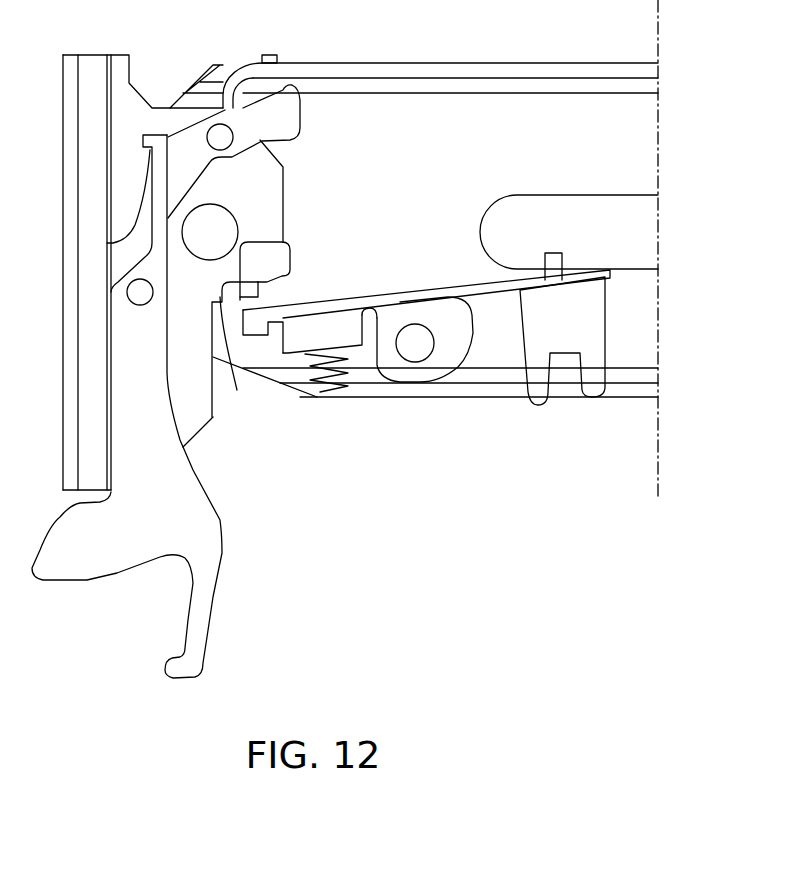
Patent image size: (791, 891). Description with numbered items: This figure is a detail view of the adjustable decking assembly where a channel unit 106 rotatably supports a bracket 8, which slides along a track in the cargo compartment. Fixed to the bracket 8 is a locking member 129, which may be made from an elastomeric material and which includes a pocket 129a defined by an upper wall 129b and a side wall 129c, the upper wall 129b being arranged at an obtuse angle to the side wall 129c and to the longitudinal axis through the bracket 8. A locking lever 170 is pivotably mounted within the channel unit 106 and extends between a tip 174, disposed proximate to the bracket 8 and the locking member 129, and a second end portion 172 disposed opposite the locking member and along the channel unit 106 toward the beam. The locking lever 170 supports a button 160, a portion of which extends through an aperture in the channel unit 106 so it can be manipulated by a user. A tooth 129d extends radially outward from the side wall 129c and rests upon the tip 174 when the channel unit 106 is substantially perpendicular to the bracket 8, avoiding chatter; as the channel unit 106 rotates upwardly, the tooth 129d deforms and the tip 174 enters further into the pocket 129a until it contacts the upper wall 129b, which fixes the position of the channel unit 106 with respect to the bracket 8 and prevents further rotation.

The bracket 8 is at (190, 373).
The channel unit 106 is at (553, 75).
The locking member 129 is at (255, 255).
The pocket 129a is at (283, 290).
The upper wall 129b is at (285, 270).
The side wall 129c is at (264, 352).
The tooth 129d is at (275, 290).
The button 160 is at (533, 315).
The locking lever 170 is at (470, 300).
The second end portion 172 is at (473, 283).
The tip 174 is at (258, 323).